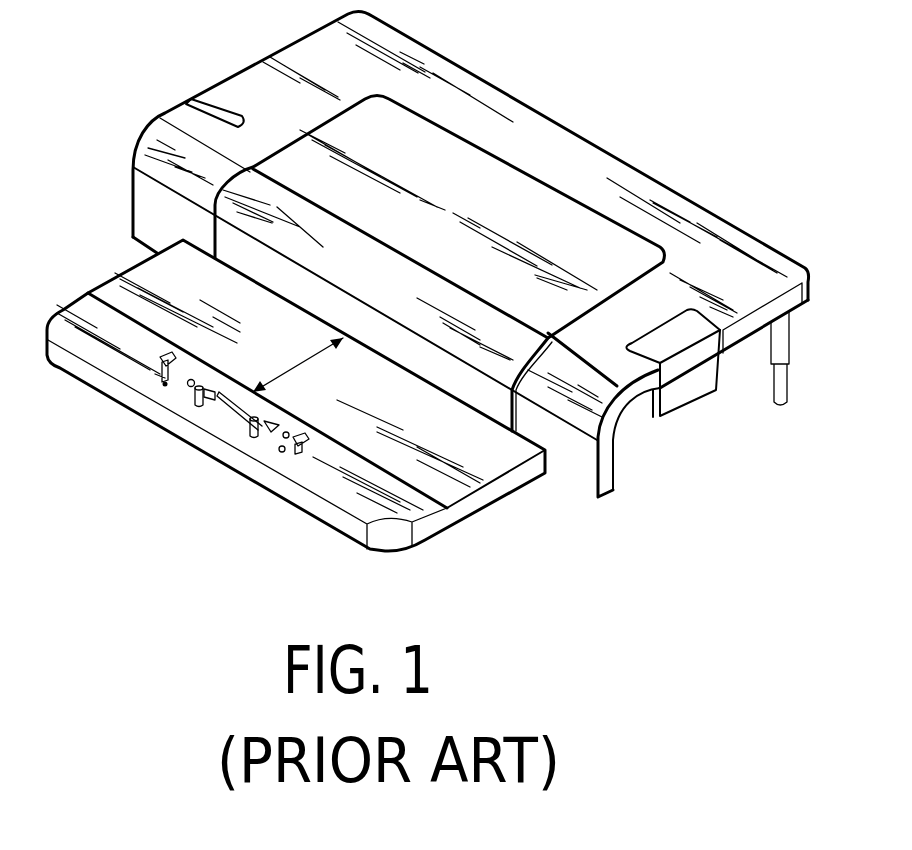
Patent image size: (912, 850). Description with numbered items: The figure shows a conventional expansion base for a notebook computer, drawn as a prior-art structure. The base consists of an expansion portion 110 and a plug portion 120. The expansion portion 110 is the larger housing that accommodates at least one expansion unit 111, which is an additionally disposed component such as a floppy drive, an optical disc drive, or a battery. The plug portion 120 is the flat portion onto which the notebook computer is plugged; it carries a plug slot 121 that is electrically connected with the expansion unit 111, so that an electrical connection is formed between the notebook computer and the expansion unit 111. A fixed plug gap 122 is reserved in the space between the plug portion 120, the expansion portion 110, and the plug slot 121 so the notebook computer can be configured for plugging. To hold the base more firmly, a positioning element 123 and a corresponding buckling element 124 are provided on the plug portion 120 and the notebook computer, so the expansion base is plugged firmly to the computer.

The expansion portion 110 is at (257, 97).
The expansion unit 111 is at (688, 388).
The plug portion 120 is at (397, 500).
The plug slot 121 is at (230, 402).
The fixed plug gap 122 is at (297, 365).
The positioning element 123 is at (247, 422).
The buckling element 124 is at (287, 452).